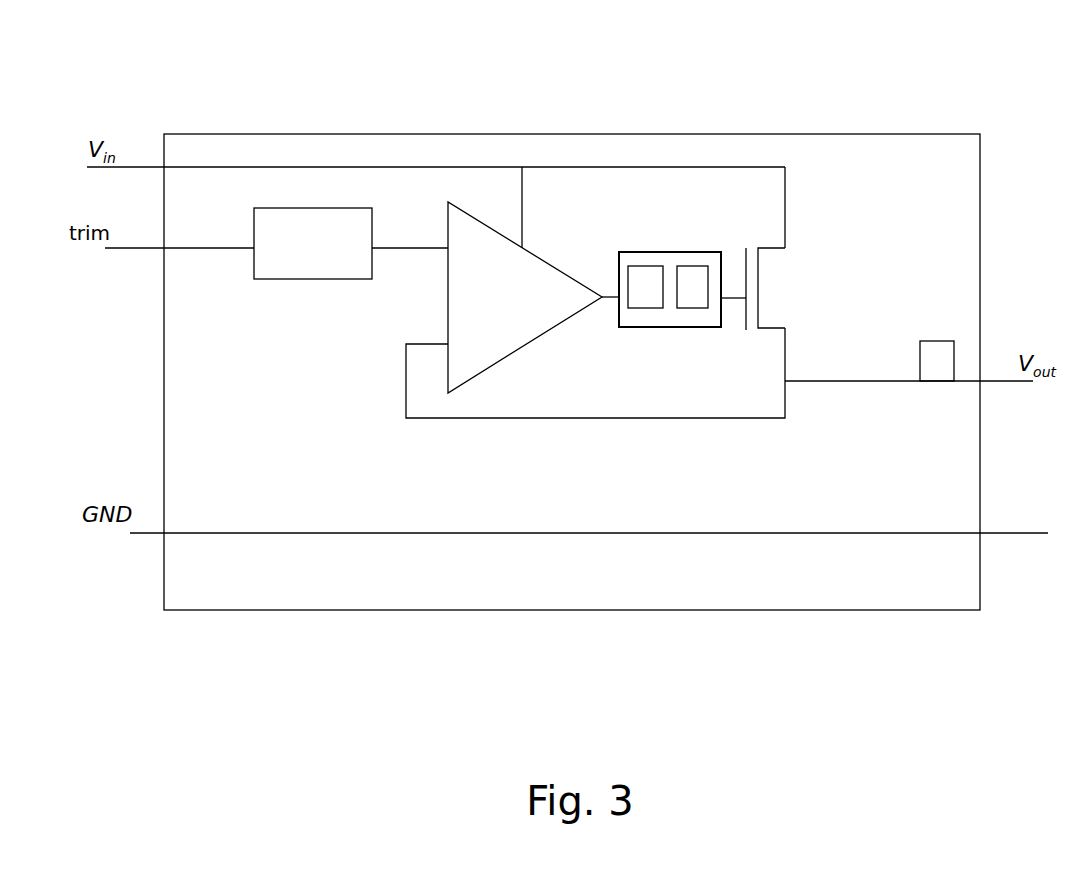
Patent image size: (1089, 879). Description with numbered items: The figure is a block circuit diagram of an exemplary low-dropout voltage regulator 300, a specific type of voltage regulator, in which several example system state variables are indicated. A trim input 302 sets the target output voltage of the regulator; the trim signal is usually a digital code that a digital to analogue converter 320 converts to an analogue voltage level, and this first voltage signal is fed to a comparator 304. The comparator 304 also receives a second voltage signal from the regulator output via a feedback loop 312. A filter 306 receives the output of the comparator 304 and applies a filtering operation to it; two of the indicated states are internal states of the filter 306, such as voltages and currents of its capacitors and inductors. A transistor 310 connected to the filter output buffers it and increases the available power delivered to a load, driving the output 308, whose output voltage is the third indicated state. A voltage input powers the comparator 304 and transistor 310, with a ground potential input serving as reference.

The low-dropout voltage regulator 300 is at (859, 132).
The trim input 302 is at (150, 253).
The comparator 304 is at (507, 357).
The filter 306 is at (678, 327).
The output 308 is at (1008, 383).
The transistor 310 is at (774, 327).
The feedback loop 312 is at (425, 418).
The digital to analogue converter 320 is at (305, 208).